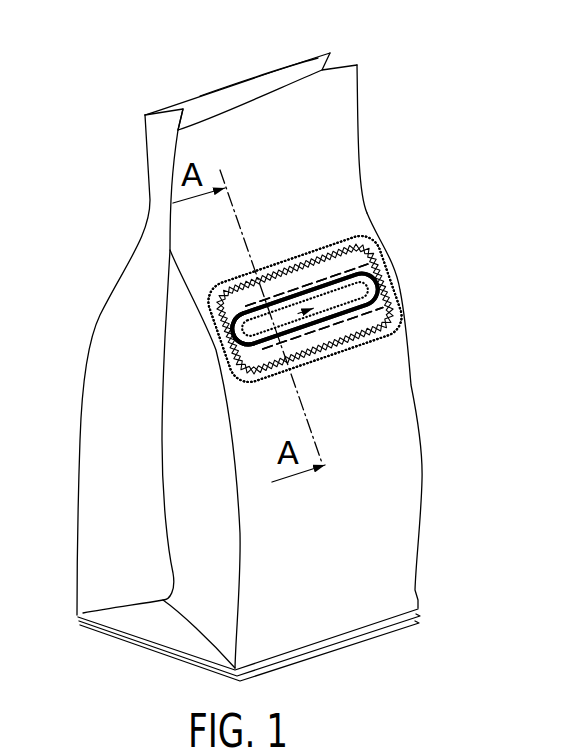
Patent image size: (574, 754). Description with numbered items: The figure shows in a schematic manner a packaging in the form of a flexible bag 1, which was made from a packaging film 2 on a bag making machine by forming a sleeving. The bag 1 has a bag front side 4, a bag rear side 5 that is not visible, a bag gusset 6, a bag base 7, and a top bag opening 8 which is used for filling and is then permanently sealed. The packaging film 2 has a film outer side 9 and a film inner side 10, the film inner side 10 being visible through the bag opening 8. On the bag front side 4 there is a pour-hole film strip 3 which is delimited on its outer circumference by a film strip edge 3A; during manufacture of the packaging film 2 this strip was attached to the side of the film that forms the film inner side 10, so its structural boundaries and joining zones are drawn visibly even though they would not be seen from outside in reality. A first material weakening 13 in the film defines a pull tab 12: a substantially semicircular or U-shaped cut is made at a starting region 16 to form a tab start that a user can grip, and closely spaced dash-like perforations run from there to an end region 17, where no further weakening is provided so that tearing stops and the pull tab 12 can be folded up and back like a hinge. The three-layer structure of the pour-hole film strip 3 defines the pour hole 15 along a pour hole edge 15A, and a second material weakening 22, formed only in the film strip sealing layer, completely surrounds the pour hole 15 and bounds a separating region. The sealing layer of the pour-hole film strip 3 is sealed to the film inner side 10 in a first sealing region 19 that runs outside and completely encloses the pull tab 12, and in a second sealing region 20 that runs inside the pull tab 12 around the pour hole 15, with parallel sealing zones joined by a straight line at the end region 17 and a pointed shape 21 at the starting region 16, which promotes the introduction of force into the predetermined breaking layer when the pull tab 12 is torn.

The bag 1 is at (167, 102).
The packaging film 2 is at (87, 490).
The pour-hole film strip 3 is at (213, 288).
The film strip edge 3A is at (352, 238).
The bag front side 4 is at (347, 80).
The bag rear side 5 is at (328, 58).
The bag gusset 6 is at (158, 208).
The bag base 7 is at (382, 641).
The bag opening 8 is at (217, 100).
The film outer side 9 is at (342, 148).
The film inner side 10 is at (298, 88).
The pull tab 12 is at (267, 360).
The first material weakening 13 is at (297, 288).
The pour hole 15 is at (323, 348).
The pour hole edge 15A is at (272, 292).
The starting region 16 is at (220, 337).
The end region 17 is at (400, 317).
The first sealing region 19 is at (365, 246).
The second sealing region 20 is at (380, 264).
The pointed shape 21 is at (237, 343).
The second material weakening 22 is at (247, 305).